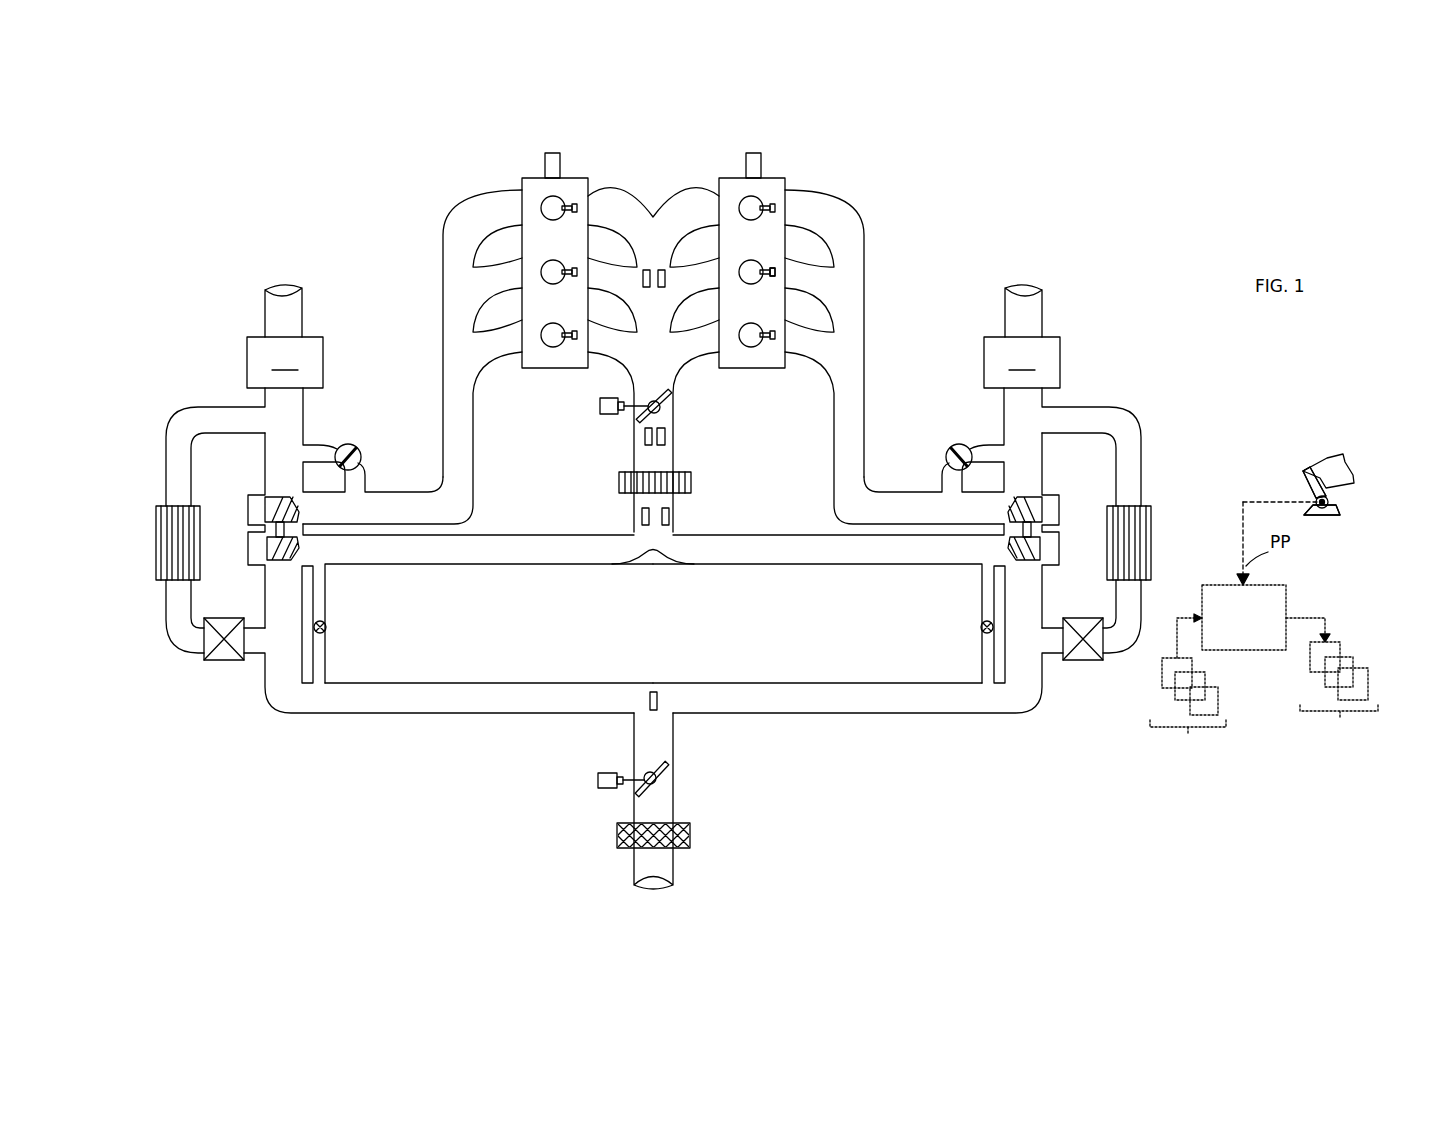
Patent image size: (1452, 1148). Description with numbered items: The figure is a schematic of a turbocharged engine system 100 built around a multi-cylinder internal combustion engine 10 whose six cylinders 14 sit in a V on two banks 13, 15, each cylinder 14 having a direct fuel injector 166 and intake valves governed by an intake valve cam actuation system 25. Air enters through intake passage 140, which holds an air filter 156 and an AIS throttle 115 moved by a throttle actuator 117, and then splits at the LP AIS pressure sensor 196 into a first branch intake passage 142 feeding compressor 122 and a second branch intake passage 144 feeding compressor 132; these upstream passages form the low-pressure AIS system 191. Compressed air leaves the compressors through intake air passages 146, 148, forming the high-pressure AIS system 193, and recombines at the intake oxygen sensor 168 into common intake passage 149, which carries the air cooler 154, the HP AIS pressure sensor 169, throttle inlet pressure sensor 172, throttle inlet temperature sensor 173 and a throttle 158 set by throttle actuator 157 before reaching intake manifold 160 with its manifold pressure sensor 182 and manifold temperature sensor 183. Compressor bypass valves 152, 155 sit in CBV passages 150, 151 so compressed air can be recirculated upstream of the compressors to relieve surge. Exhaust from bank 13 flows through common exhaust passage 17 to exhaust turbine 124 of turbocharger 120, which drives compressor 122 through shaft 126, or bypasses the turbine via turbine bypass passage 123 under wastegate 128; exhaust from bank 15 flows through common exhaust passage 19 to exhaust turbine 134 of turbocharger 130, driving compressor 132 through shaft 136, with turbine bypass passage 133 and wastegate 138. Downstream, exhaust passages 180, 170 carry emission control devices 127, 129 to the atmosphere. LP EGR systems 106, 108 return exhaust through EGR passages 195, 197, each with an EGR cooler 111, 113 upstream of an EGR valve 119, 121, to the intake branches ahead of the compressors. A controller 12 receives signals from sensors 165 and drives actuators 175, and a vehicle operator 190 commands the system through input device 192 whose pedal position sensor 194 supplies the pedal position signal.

The internal combustion engine 10 is at (996, 187).
The turbocharged engine system 100 is at (318, 234).
The intake manifold 160 is at (653, 201).
The second bank 15 is at (522, 182).
The first bank 13 is at (785, 182).
The intake valve cam actuation system 25 is at (559, 157).
The cylinder 14 is at (752, 262).
The fuel injector 166 is at (771, 270).
The intake manifold pressure sensor 182 is at (646, 288).
The intake manifold temperature sensor 183 is at (662, 288).
The common intake passage 149 is at (673, 421).
The throttle 158 is at (655, 398).
The throttle actuator 157 is at (600, 403).
The throttle inlet pressure sensor 172 is at (645, 440).
The throttle inlet temperature sensor 173 is at (665, 440).
The air cooler 154 is at (691, 480).
The HP AIS pressure sensor 169 is at (642, 520).
The intake oxygen sensor 168 is at (669, 520).
The common exhaust passage 19 is at (443, 421).
The common exhaust passage 17 is at (864, 428).
The exhaust passage 180 is at (302, 335).
The exhaust passage 170 is at (1005, 327).
The emission control device 127 is at (285, 362).
The emission control device 129 is at (1022, 362).
The LP EGR system 106 is at (209, 394).
The LP EGR system 108 is at (1133, 386).
The turbine bypass passage 133 is at (318, 446).
The turbine bypass passage 123 is at (994, 446).
The wastegate 138 is at (359, 449).
The wastegate 128 is at (949, 452).
The compressor 132 is at (258, 563).
The compressor 122 is at (1040, 566).
The turbocharger 130 is at (291, 489).
The turbocharger 120 is at (1018, 489).
The exhaust turbine 134 is at (265, 497).
The exhaust turbine 124 is at (1043, 497).
The shaft 136 is at (270, 540).
The shaft 126 is at (1040, 541).
The EGR cooler 111 is at (200, 521).
The EGR cooler 113 is at (1153, 541).
The EGR passage 195 is at (178, 664).
The EGR passage 197 is at (1143, 456).
The EGR valve 119 is at (232, 661).
The EGR valve 121 is at (1083, 661).
The CBV passage 150 is at (313, 586).
The CBV passage 151 is at (994, 645).
The compressor bypass valve 152 is at (327, 627).
The compressor bypass valve 155 is at (981, 624).
The high-pressure AIS system 193 is at (393, 559).
The intake air passage 148 is at (396, 566).
The intake air passage 146 is at (822, 566).
The intake passage 144 is at (430, 682).
The intake passage 142 is at (828, 682).
The low-pressure AIS system 191 is at (397, 708).
The LP AIS pressure sensor 196 is at (650, 690).
The intake passage 140 is at (672, 881).
The AIS throttle 115 is at (651, 772).
The throttle actuator 117 is at (598, 776).
The air filter 156 is at (690, 841).
The controller 12 is at (1244, 576).
The sensors 165 is at (1188, 684).
The actuators 175 is at (1332, 678).
The vehicle operator 190 is at (1352, 472).
The input device 192 is at (1305, 482).
The pedal position sensor 194 is at (1340, 501).